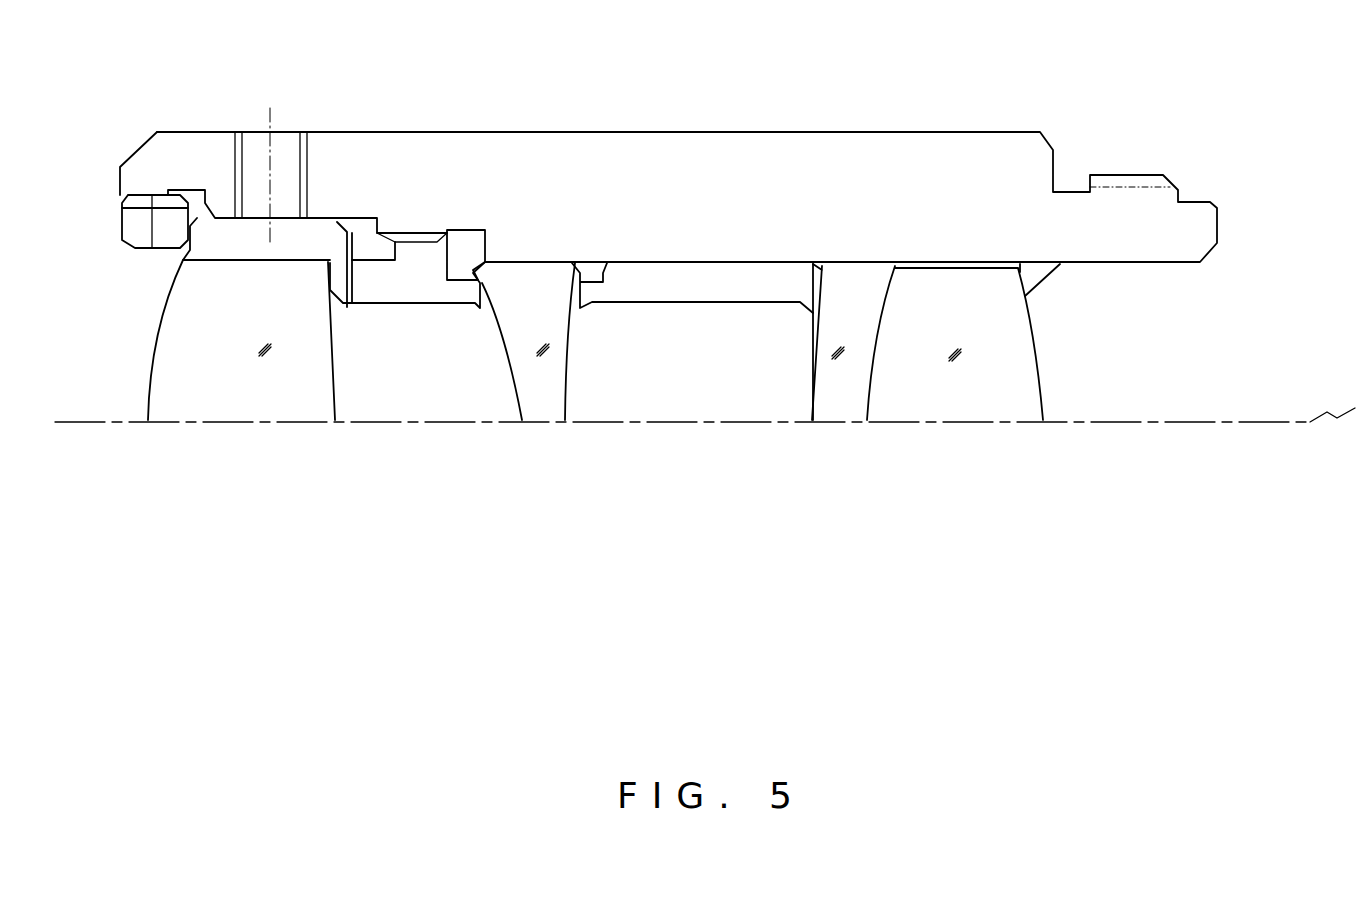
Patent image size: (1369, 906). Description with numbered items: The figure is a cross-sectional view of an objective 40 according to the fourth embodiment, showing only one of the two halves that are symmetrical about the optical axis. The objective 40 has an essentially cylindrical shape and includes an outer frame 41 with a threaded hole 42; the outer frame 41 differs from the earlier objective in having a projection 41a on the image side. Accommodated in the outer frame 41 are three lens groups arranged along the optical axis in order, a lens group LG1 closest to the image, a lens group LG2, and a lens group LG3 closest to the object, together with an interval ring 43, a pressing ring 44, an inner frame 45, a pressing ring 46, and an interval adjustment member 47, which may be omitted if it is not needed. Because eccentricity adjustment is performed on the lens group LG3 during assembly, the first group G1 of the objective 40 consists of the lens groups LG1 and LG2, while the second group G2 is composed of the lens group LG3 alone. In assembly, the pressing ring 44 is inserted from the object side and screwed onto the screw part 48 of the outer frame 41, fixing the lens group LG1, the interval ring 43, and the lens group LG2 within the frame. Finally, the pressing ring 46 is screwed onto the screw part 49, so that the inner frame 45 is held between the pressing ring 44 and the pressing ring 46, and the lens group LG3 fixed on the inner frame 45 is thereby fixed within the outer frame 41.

The objective 40 is at (698, 299).
The outer frame 41 is at (155, 165).
The projection 41a is at (1033, 265).
The threaded hole 42 is at (255, 147).
The interval ring 43 is at (717, 277).
The pressing ring 44 is at (415, 285).
The inner frame 45 is at (335, 295).
The pressing ring 46 is at (138, 233).
The interval adjustment member 47 is at (348, 310).
The screw part 48 is at (427, 238).
The screw part 49 is at (140, 205).
The lens group LG1 is at (927, 381).
The lens group LG2 is at (550, 403).
The lens group LG3 is at (277, 395).
The first group G1 is at (762, 411).
The second group G2 is at (241, 408).